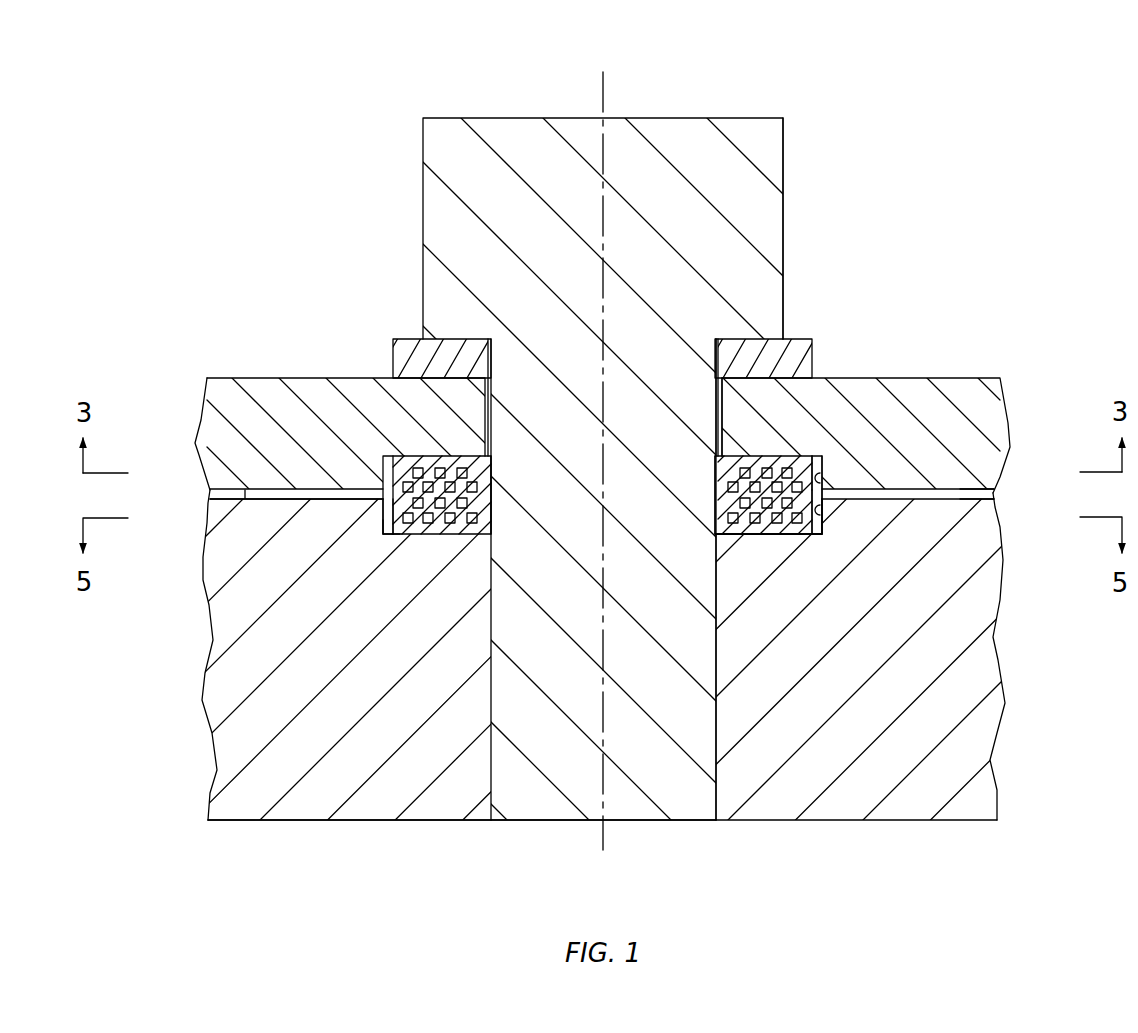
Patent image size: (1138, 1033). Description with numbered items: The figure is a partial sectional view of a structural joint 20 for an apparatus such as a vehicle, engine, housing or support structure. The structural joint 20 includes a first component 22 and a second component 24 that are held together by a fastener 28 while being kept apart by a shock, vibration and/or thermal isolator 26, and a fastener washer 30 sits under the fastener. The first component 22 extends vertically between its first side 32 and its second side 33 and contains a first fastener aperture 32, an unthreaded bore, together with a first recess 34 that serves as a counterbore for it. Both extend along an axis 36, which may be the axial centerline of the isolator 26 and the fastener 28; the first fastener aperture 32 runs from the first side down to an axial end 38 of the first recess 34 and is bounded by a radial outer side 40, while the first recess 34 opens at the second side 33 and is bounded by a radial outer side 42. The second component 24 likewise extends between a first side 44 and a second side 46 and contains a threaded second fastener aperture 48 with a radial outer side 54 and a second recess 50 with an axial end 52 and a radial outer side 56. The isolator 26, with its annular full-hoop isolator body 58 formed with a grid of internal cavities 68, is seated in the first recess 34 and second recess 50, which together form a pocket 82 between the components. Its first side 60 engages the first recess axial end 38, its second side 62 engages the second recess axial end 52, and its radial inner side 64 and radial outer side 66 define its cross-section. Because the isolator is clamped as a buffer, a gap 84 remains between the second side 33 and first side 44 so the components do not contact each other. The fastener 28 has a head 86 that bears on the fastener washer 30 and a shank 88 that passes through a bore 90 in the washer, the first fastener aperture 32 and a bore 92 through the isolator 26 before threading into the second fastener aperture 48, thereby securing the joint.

The structural joint 20 is at (1043, 122).
The first component 22 is at (1003, 367).
The second component 24 is at (1012, 829).
The isolator 26 is at (745, 543).
The fastener 28 is at (795, 113).
The fastener washer 30 is at (827, 336).
The first fastener aperture 32 is at (242, 378).
The second side of the first component 33 is at (245, 497).
The first recess 34 is at (381, 468).
The axis 36 is at (598, 82).
The axial end of the first recess 38 is at (824, 467).
The radial outer side of the first fastener aperture 40 is at (715, 403).
The radial outer side of the first recess 42 is at (824, 470).
The first side of the second component 44 is at (226, 487).
The second side of the second component 46 is at (245, 822).
The second fastener aperture 48 is at (489, 744).
The second recess 50 is at (381, 522).
The axial end of the second recess 52 is at (836, 583).
The radial outer side of the second fastener aperture 54 is at (716, 660).
The radial outer side of the second recess 56 is at (825, 512).
The isolator body 58 is at (769, 495).
The first side of the isolator 60 is at (793, 456).
The second side of the isolator 62 is at (785, 536).
The radial inner side of the isolator 64 is at (715, 495).
The radial outer side of the isolator 66 is at (824, 494).
The internal cavities 68 is at (462, 456).
The pocket 82 is at (386, 538).
The gap 84 is at (996, 494).
The head 86 is at (784, 190).
The shank 88 is at (661, 822).
The bore through the fastener washer 90 is at (485, 357).
The bore through the isolator 92 is at (486, 532).